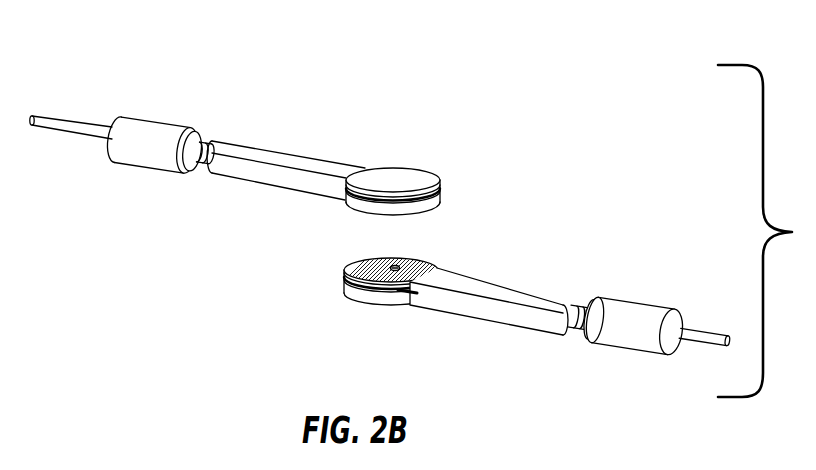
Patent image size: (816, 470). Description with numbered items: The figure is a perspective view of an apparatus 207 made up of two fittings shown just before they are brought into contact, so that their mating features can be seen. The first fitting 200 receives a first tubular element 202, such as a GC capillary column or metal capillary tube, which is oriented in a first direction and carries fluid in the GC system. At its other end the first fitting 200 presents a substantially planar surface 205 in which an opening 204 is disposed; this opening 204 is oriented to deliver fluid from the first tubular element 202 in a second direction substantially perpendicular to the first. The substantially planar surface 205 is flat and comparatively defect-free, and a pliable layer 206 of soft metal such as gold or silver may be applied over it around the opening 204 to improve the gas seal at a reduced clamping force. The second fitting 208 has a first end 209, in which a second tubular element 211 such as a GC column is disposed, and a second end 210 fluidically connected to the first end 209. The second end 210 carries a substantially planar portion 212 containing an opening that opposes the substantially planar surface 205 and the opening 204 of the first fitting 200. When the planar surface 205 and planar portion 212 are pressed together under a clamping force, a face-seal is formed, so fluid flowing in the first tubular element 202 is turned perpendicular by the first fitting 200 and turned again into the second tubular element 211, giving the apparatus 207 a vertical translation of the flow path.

The apparatus 207 is at (392, 36).
The second tubular element 211 is at (53, 114).
The first end 209 is at (148, 166).
The second fitting 208 is at (392, 180).
The second end 210 is at (442, 193).
The substantially planar portion 212 is at (437, 210).
The pliable layer 206 is at (411, 266).
The opening 204 is at (395, 266).
The substantially planar surface 205 is at (424, 262).
The first fitting 200 is at (527, 323).
The first tubular element 202 is at (718, 333).